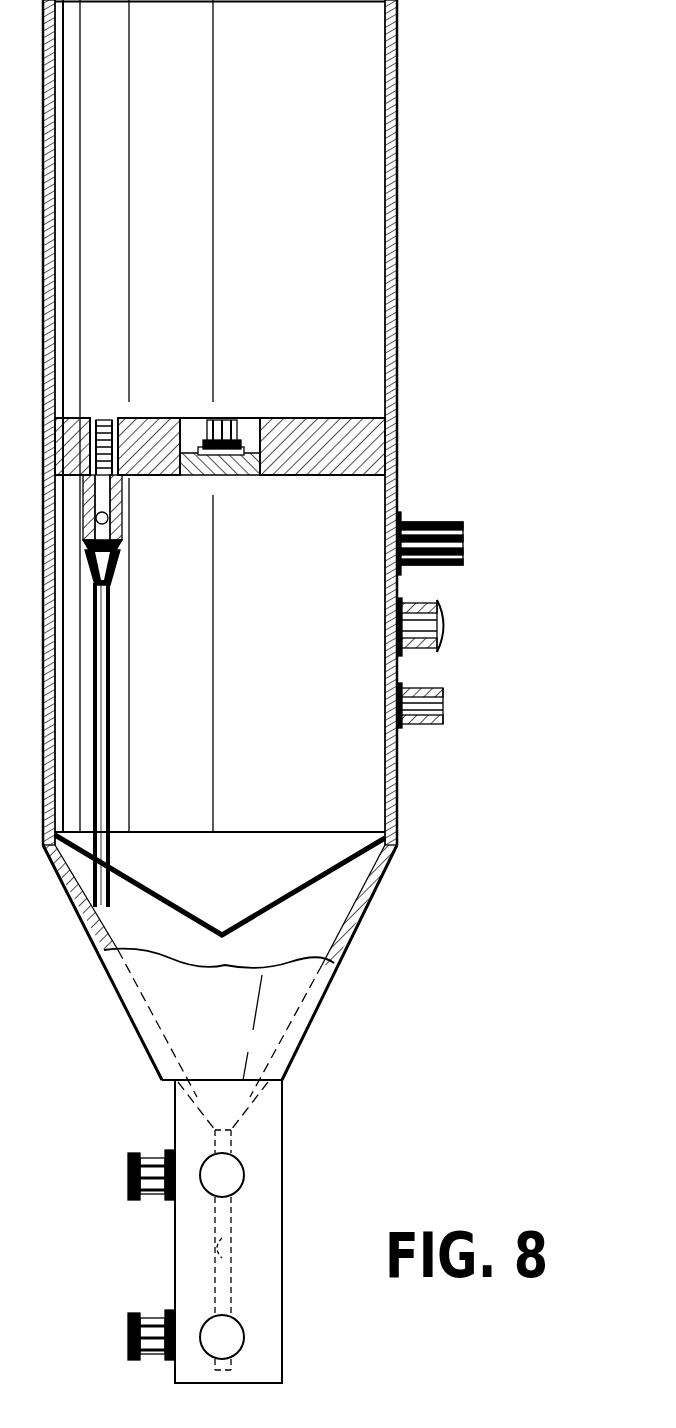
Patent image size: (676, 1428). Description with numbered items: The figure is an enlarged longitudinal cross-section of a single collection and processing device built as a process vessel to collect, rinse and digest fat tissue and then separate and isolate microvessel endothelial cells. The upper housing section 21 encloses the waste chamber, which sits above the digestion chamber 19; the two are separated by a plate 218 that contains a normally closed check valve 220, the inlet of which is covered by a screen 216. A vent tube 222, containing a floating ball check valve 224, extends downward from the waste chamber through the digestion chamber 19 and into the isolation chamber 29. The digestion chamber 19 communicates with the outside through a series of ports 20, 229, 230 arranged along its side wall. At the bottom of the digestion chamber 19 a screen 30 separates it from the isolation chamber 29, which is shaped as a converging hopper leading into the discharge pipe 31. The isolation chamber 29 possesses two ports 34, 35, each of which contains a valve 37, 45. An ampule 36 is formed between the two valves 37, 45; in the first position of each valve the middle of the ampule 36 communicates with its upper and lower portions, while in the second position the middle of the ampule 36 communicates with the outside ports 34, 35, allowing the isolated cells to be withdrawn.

The upper housing section 21 is at (355, 178).
The digestion chamber 19 is at (338, 755).
The plate 218 is at (300, 418).
The screen 216 is at (232, 478).
The check valve 220 is at (207, 432).
The floating ball check valve 224 is at (122, 510).
The vent tube 222 is at (110, 660).
The port 20 is at (455, 522).
The port 229 is at (447, 622).
The port 230 is at (440, 690).
The screen 30 is at (333, 868).
The isolation chamber 29 is at (215, 948).
The discharge pipe 31 is at (175, 1256).
The ampule 36 is at (231, 1235).
The valve 37 is at (237, 1170).
The valve 45 is at (232, 1330).
The port 34 is at (133, 1175).
The port 35 is at (133, 1335).